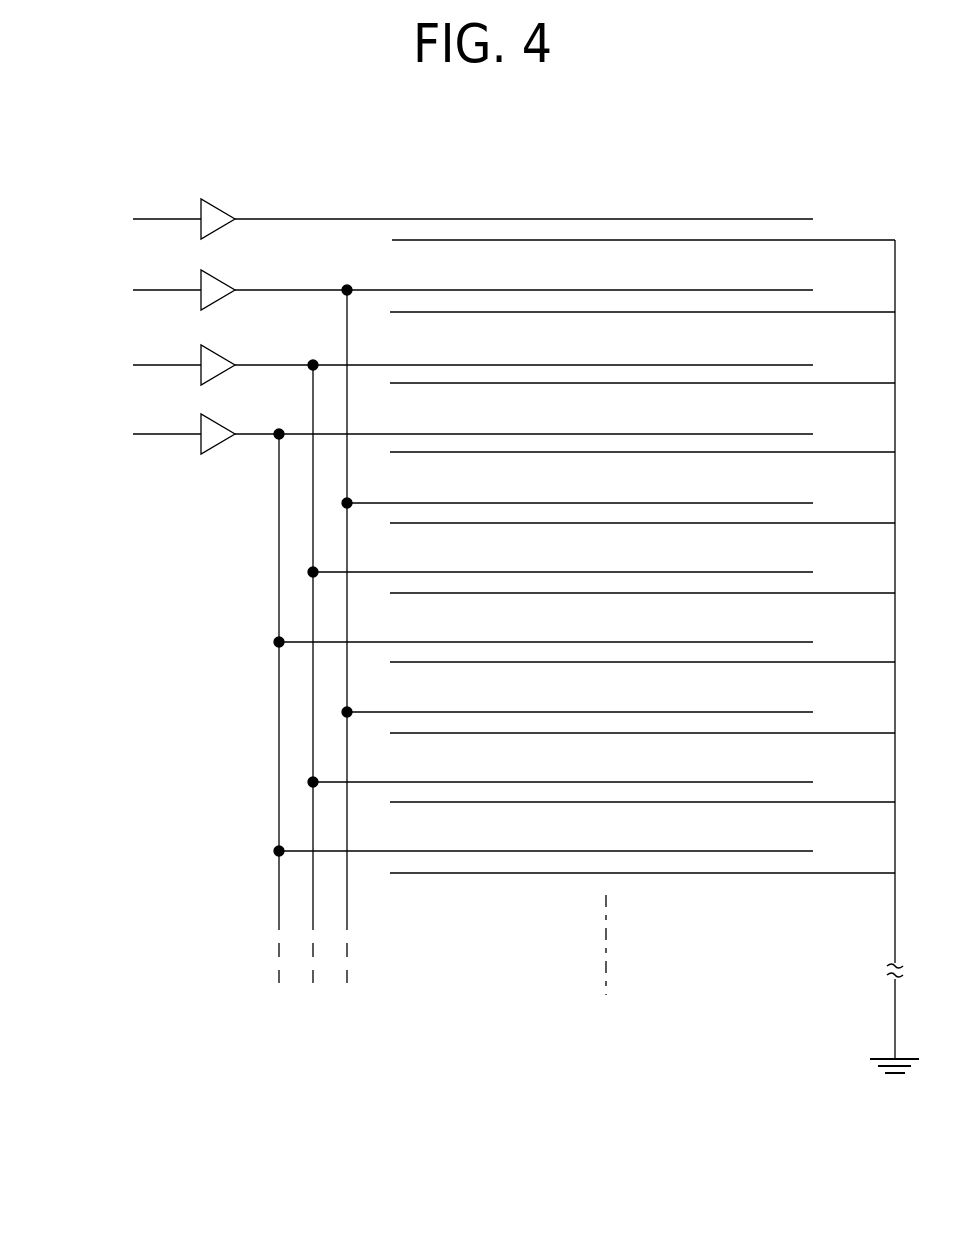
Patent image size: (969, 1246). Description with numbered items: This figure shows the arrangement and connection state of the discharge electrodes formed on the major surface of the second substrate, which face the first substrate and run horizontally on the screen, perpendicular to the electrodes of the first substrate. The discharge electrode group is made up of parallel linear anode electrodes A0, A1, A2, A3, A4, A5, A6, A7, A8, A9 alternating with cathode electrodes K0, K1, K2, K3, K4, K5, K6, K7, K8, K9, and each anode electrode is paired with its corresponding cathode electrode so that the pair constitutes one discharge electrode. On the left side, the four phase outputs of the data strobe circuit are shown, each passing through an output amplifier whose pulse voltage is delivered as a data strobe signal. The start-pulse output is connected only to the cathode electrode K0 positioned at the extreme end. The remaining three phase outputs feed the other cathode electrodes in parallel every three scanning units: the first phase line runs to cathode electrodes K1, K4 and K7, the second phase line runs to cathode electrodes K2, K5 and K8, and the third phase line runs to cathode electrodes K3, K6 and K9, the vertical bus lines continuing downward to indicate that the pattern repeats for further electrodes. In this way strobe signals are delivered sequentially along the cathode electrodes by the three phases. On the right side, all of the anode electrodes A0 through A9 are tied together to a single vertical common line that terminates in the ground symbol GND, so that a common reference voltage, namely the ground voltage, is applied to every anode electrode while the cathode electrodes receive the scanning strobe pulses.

The cathode electrode K0 is at (549, 218).
The cathode electrode K1 is at (549, 289).
The cathode electrode K2 is at (549, 364).
The cathode electrode K3 is at (549, 433).
The cathode electrode K4 is at (605, 502).
The cathode electrode K5 is at (588, 571).
The cathode electrode K6 is at (571, 641).
The cathode electrode K7 is at (605, 711).
The cathode electrode K8 is at (588, 781).
The cathode electrode K9 is at (571, 850).
The anode electrode A0 is at (616, 247).
The anode electrode A1 is at (626, 328).
The anode electrode A2 is at (626, 399).
The anode electrode A3 is at (626, 468).
The anode electrode A4 is at (626, 539).
The anode electrode A5 is at (626, 609).
The anode electrode A6 is at (626, 678).
The anode electrode A7 is at (626, 749).
The anode electrode A8 is at (626, 818).
The anode electrode A9 is at (626, 889).
The common ground connection GND is at (762, 656).